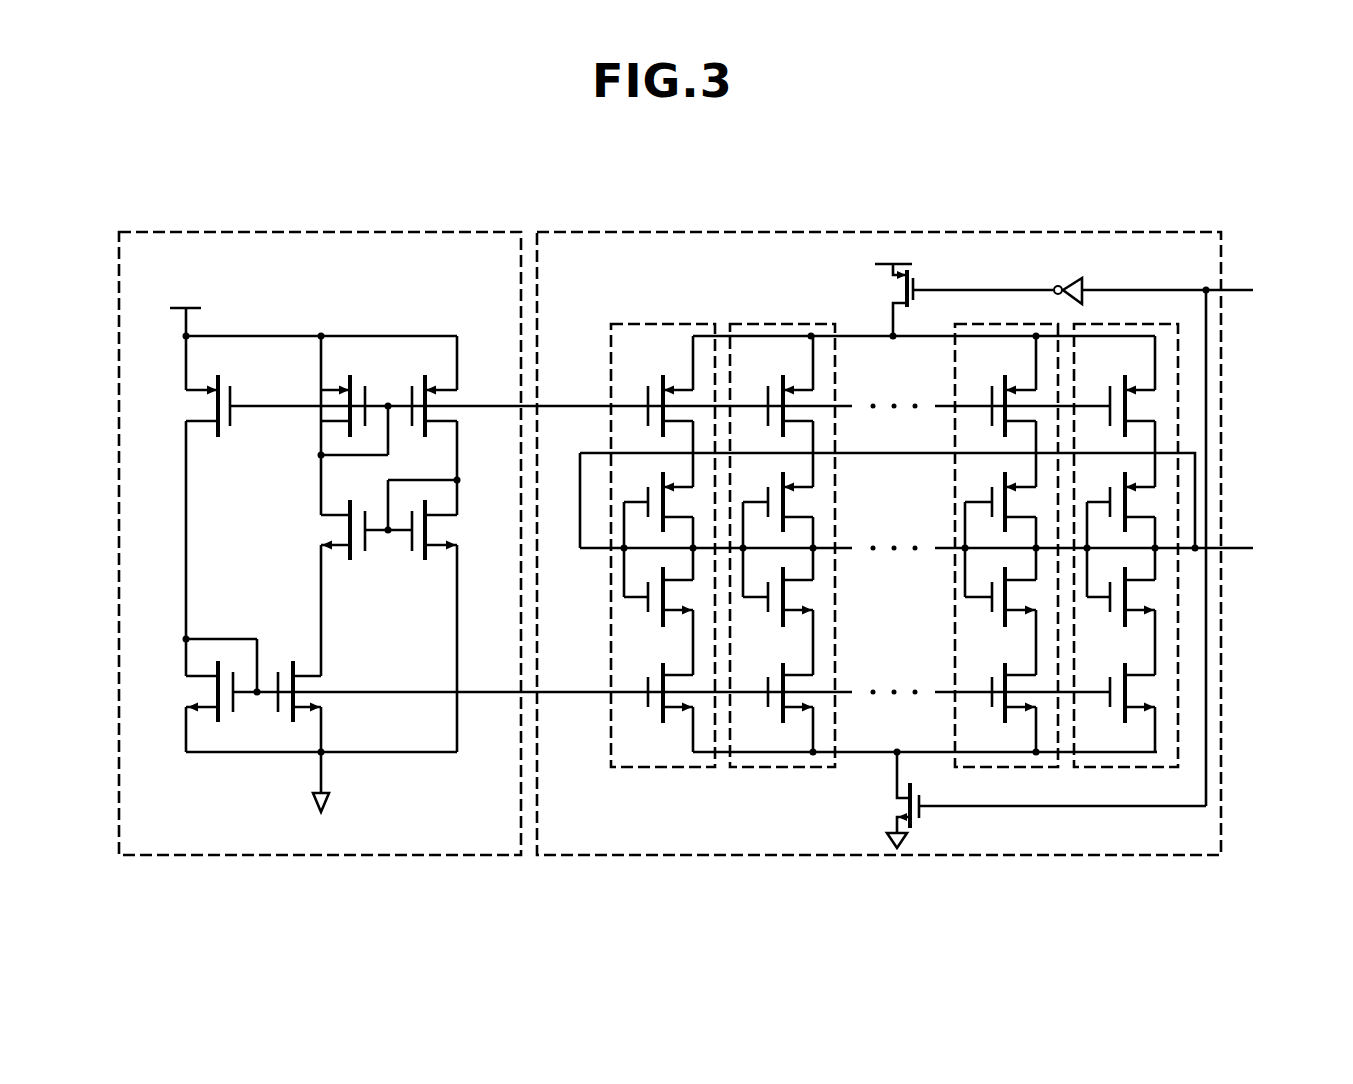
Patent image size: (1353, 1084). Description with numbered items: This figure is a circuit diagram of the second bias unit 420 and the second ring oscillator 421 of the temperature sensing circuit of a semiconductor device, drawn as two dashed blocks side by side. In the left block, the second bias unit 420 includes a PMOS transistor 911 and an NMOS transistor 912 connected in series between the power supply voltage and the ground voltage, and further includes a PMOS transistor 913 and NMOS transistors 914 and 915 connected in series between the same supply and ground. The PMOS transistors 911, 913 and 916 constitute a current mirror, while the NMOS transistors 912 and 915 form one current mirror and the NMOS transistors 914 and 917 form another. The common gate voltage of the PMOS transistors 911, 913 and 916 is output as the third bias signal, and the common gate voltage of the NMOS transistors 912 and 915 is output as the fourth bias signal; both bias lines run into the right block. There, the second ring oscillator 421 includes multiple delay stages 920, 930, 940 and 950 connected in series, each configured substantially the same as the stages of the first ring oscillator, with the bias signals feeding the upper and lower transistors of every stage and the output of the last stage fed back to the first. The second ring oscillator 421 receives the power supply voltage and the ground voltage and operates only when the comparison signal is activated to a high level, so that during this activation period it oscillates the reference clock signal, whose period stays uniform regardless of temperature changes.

The second bias unit 420 is at (485, 513).
The second ring oscillator 421 is at (929, 514).
The PMOS transistor 911 is at (186, 406).
The NMOS transistor 912 is at (187, 691).
The PMOS transistor 913 is at (319, 406).
The NMOS transistor 914 is at (319, 530).
The NMOS transistor 915 is at (327, 690).
The PMOS transistor 916 is at (460, 406).
The NMOS transistor 917 is at (460, 530).
The delay stage 920 is at (677, 768).
The delay stage 930 is at (797, 768).
The delay stage 940 is at (1015, 768).
The delay stage 950 is at (1138, 768).